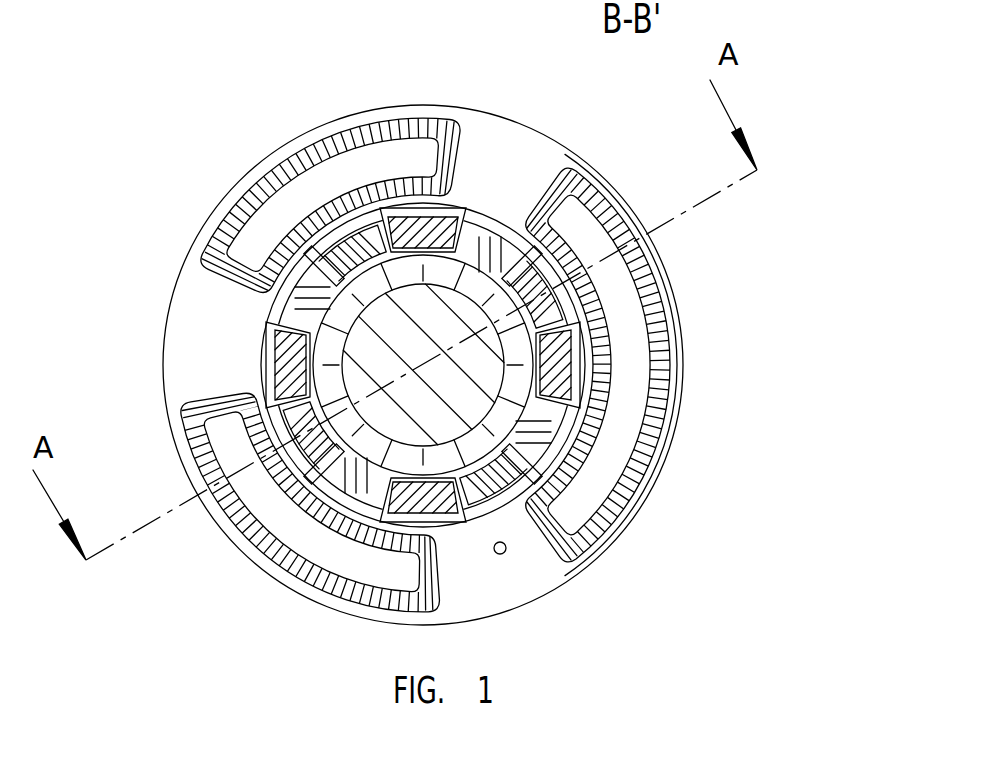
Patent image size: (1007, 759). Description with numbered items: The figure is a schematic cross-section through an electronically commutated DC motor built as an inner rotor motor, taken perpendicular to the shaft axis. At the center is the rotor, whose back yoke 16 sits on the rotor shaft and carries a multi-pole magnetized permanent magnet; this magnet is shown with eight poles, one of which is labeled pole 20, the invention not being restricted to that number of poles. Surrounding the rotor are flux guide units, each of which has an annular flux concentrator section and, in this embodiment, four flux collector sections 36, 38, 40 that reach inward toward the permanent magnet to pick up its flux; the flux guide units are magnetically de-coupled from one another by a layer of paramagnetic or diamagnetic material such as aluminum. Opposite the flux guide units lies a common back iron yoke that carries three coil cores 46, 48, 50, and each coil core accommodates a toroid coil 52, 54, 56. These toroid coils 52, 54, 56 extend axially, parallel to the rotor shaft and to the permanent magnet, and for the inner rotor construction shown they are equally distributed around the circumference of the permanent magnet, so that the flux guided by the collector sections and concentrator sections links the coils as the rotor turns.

The back yoke 16 is at (304, 365).
The pole 20 is at (510, 388).
The flux collector section 36 is at (447, 156).
The flux collector section 38 is at (432, 330).
The flux collector section 40 is at (298, 213).
The coil core 46 is at (638, 373).
The coil core 48 is at (307, 533).
The coil core 50 is at (265, 235).
The toroid coil 52 is at (647, 272).
The toroid coil 54 is at (205, 453).
The toroid coil 56 is at (366, 130).